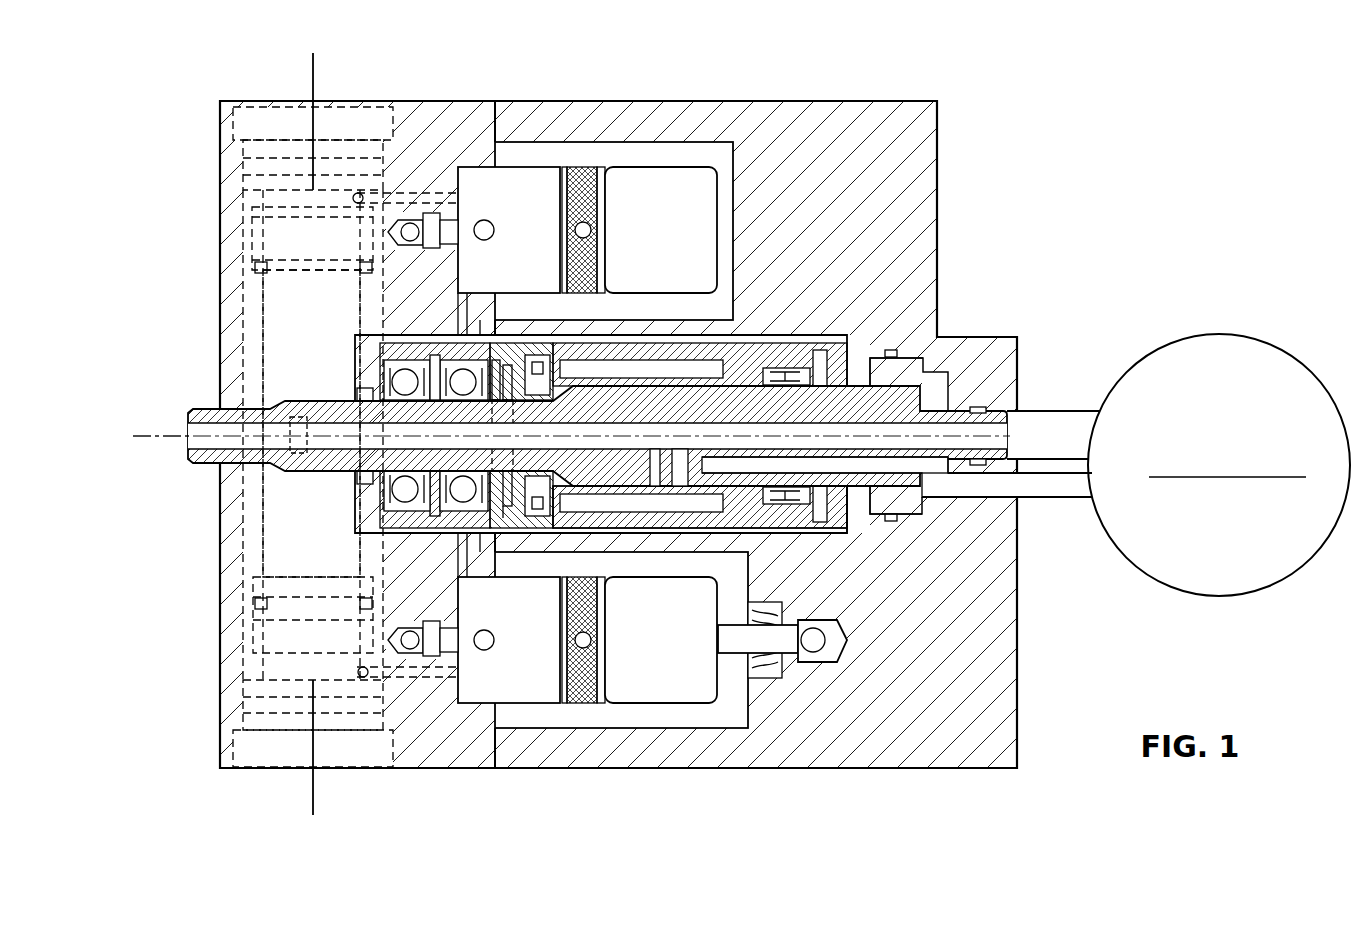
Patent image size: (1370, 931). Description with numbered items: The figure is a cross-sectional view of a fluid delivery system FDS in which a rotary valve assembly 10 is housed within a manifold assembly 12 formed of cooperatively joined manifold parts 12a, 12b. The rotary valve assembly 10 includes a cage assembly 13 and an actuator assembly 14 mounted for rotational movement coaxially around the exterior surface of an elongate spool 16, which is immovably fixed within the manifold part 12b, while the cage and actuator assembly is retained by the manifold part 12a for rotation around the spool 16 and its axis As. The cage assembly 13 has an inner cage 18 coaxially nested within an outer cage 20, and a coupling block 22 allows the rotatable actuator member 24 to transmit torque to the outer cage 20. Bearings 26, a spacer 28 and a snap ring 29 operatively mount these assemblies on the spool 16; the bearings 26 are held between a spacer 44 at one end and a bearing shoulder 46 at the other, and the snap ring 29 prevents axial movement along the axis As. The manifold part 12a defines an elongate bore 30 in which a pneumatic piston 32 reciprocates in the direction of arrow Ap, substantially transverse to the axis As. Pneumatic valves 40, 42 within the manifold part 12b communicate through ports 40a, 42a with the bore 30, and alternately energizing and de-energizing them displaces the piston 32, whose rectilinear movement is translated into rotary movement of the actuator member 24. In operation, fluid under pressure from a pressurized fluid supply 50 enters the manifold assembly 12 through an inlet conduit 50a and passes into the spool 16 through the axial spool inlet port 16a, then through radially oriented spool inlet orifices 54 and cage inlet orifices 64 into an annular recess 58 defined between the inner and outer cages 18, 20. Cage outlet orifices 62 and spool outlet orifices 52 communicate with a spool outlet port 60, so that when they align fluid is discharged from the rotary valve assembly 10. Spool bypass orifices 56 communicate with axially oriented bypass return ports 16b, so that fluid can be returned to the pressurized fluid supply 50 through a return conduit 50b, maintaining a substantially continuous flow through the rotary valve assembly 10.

The rotary valve assembly 10 is at (760, 322).
The manifold assembly 12 is at (935, 180).
The manifold part 12a is at (416, 146).
The manifold part 12b is at (803, 171).
The cage assembly 13 is at (713, 348).
The actuator assembly 14 is at (392, 343).
The spool 16 is at (945, 370).
The axial spool inlet port 16a is at (885, 435).
The bypass return ports 16b is at (905, 470).
The inner cage 18 is at (836, 522).
The outer cage 20 is at (610, 508).
The coupling block 22 is at (545, 352).
The actuator member 24 is at (437, 346).
The bearings 26 is at (408, 515).
The spacer 28 is at (512, 518).
The snap ring 29 is at (518, 360).
The elongate bore 30 is at (235, 638).
The pneumatic piston 32 is at (300, 532).
The pneumatic valve 40 is at (648, 240).
The port 40a is at (372, 225).
The pneumatic valve 42 is at (638, 650).
The port 42a is at (375, 645).
The spacer 44 is at (365, 386).
The bearing shoulder 46 is at (506, 362).
The pressurized fluid supply 50 is at (1232, 568).
The inlet conduit 50a is at (1072, 425).
The return conduit 50b is at (1060, 490).
The spool outlet orifices 52 is at (655, 455).
The spool inlet orifices 54 is at (682, 455).
The spool bypass orifices 56 is at (722, 470).
The annular recess 58 is at (670, 362).
The spool outlet port 60 is at (217, 425).
The cage outlet orifices 62 is at (682, 506).
The cage inlet orifices 64 is at (752, 515).
The fluid delivery system FDS is at (868, 90).
The arrow Ap is at (313, 74).
The axis As is at (170, 440).